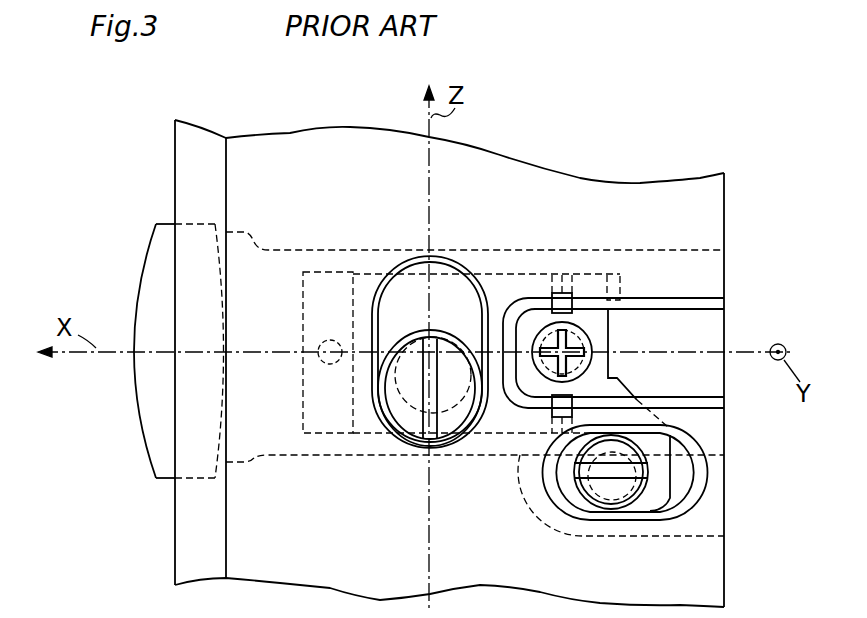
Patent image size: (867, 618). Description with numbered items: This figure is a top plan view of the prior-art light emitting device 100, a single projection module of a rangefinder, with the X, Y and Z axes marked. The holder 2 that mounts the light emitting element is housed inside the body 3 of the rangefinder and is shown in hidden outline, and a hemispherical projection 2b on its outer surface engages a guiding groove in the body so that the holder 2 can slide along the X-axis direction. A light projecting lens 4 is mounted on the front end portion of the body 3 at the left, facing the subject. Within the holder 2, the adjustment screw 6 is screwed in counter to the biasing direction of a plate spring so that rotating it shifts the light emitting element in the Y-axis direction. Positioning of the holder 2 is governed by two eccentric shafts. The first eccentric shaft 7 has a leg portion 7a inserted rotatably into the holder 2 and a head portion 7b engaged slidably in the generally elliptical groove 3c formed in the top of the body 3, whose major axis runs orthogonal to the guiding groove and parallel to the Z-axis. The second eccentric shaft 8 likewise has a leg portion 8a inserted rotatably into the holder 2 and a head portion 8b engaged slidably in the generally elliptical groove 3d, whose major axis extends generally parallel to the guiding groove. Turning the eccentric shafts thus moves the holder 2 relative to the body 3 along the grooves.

The light emitting device 100 is at (568, 61).
The holder 2 is at (337, 272).
The hemispherical projections 2b is at (322, 362).
The body of the rangefinder 3 is at (486, 166).
The elliptical groove 3c is at (476, 330).
The elliptical groove 3d is at (680, 508).
The light projecting lens 4 is at (150, 445).
The adjustment screw 6 is at (583, 338).
The first eccentric shaft 7 is at (398, 420).
The leg portion 7a is at (465, 410).
The head portion 7b is at (400, 388).
The second eccentric shaft 8 is at (583, 509).
The leg portion 8a is at (626, 500).
The head portion 8b is at (577, 490).